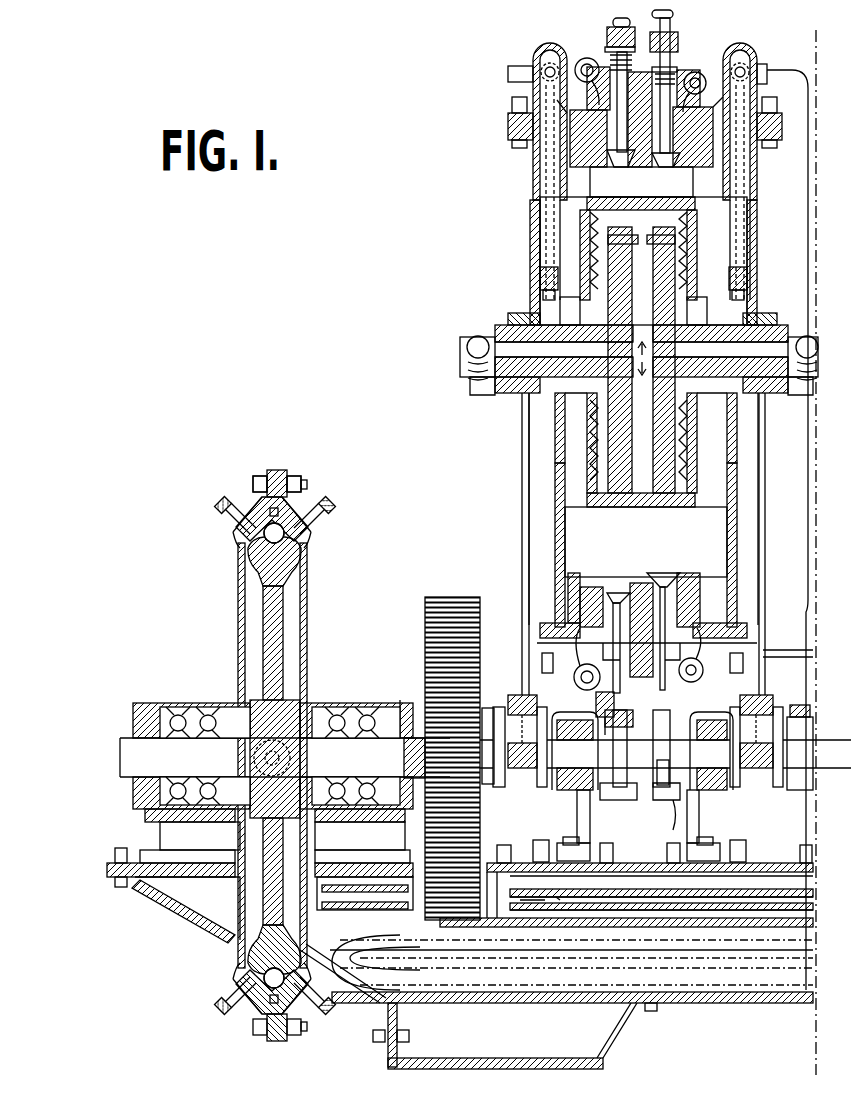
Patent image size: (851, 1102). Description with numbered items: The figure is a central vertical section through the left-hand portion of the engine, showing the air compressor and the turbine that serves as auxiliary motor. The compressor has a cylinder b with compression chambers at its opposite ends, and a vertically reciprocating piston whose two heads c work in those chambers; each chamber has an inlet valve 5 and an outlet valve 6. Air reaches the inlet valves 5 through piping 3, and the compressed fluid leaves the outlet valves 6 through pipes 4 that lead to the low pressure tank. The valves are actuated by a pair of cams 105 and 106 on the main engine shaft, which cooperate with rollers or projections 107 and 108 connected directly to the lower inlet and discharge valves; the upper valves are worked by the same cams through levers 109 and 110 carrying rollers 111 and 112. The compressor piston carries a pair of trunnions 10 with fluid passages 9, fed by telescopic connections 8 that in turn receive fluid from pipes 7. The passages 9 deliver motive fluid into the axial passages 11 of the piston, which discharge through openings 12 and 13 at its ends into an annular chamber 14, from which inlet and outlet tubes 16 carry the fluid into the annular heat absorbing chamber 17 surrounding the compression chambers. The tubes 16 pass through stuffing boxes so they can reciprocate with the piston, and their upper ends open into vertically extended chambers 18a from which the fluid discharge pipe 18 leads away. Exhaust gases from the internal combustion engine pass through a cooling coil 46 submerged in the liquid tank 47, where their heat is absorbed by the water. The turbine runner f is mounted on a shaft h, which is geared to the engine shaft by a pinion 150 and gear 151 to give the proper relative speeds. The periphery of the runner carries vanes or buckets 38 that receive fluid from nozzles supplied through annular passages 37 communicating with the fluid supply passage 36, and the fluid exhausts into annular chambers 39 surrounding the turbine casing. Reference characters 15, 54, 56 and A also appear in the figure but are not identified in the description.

The piping 3 is at (716, 76).
The pipes 4 is at (585, 58).
The inlet valves 5 is at (680, 590).
The outlet valves 6 is at (502, 570).
The pipes 7 is at (641, 401).
The telescopic connections 8 is at (466, 350).
The fluid passages 9 is at (505, 330).
The trunnions 10 is at (587, 420).
The axial passages 11 is at (641, 360).
The opening 12 is at (641, 229).
The opening 13 is at (641, 497).
The annular chamber 14 is at (592, 237).
The packing gland 15 is at (545, 300).
The inlet and outlet tubes 16 is at (580, 207).
The annular heat absorbing chamber 17 is at (530, 158).
The fluid discharge pipe 18 is at (548, 50).
The vertically extended chambers 18a is at (518, 66).
The fluid supply passage 36 is at (744, 973).
The annular passages 37 is at (292, 510).
The vanes or buckets 38 is at (286, 548).
The annular chambers 39 is at (314, 502).
The cooling coil 46 is at (680, 967).
The liquid tank 47 is at (703, 957).
The shaft bearing 54 is at (523, 780).
The valve rod 56 is at (522, 502).
The cam 105 is at (690, 820).
The cam 106 is at (600, 760).
The roller or projection 107 is at (752, 700).
The roller or projection 108 is at (574, 751).
The lever 109 is at (800, 800).
The lever 110 is at (655, 800).
The roller 111 is at (690, 789).
The roller 112 is at (610, 797).
The pinion 150 is at (440, 730).
The gear 151 is at (422, 640).
The section line A is at (795, 553).
The cylinder b is at (552, 190).
The piston heads c is at (646, 375).
The runner or revoluble element f is at (290, 610).
The shaft h is at (122, 745).